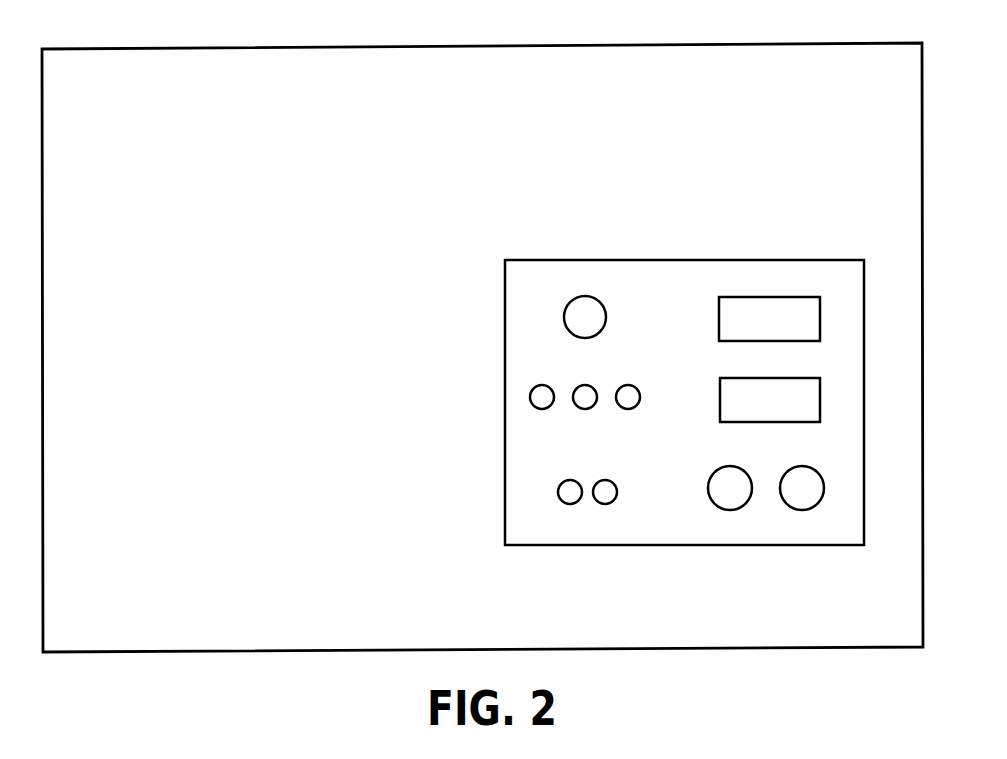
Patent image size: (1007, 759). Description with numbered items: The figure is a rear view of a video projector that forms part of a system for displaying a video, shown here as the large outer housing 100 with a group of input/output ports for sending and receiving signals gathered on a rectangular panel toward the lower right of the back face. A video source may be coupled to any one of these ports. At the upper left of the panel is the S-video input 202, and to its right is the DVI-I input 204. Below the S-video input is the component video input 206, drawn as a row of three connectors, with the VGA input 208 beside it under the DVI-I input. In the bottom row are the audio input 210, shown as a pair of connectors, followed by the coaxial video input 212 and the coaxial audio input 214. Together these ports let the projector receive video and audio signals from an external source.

The electronic device housing 100 is at (463, 22).
The S-video input 202 is at (597, 296).
The DVI-I input 204 is at (738, 296).
The component video input 206 is at (540, 386).
The VGA input 208 is at (768, 378).
The audio input 210 is at (567, 481).
The coaxial video input 212 is at (745, 467).
The coaxial audio input 214 is at (813, 468).